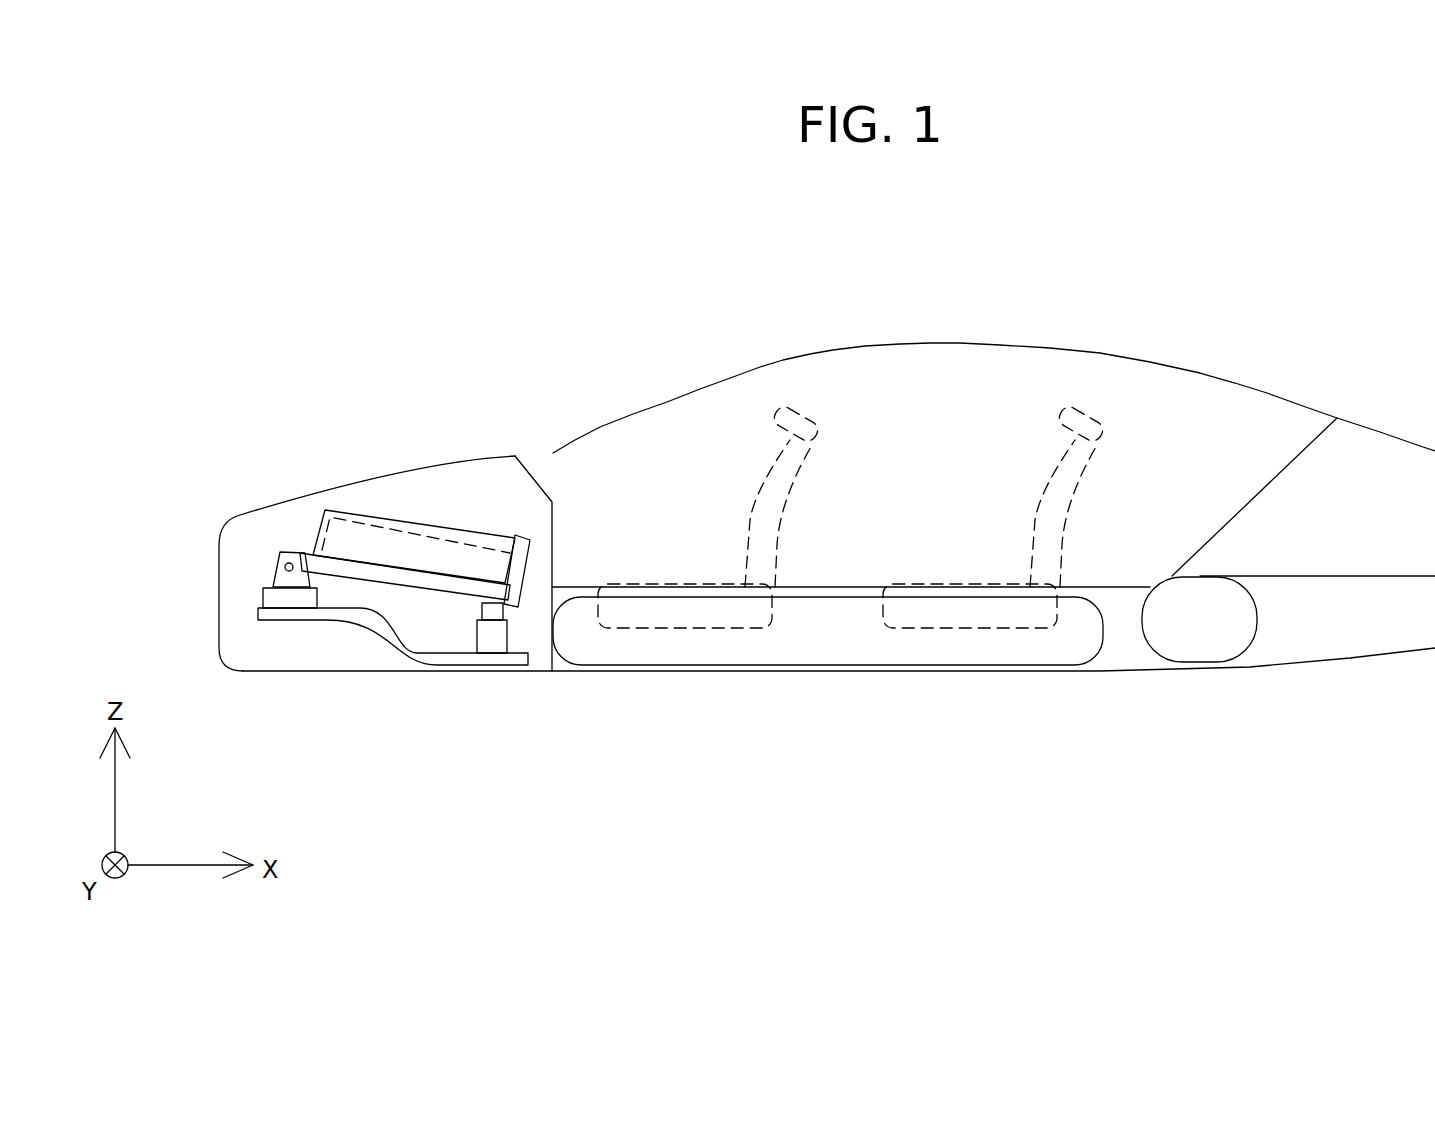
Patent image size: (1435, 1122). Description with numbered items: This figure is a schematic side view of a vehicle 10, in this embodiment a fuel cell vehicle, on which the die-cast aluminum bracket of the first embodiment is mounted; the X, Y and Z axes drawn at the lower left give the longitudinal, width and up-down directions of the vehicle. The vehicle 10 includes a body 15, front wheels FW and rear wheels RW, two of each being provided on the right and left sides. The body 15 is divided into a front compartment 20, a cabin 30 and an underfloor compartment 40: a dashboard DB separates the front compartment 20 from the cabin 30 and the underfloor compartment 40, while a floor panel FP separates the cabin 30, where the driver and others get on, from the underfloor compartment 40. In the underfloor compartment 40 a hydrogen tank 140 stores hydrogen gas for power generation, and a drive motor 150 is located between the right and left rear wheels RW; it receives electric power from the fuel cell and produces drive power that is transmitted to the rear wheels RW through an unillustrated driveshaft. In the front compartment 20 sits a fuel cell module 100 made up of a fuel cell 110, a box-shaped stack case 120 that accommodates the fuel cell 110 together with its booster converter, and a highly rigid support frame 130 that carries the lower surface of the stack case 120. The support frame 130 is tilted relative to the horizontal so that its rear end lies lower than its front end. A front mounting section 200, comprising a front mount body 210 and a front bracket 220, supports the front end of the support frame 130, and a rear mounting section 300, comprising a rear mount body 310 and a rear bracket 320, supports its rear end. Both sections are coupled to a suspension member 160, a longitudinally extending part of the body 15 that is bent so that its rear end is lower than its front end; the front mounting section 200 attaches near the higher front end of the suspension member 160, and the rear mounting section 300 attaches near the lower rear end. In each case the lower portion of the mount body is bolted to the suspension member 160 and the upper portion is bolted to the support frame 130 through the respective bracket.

The vehicle 10 is at (1283, 248).
The body 15 is at (1082, 347).
The front compartment 20 is at (450, 510).
The cabin 30 is at (957, 462).
The underfloor compartment 40 is at (1112, 652).
The fuel cell module 100 is at (411, 477).
The fuel cell 110 is at (513, 578).
The stack case 120 is at (377, 520).
The support frame 130 is at (307, 557).
The hydrogen tank 140 is at (853, 667).
The drive motor 150 is at (1257, 630).
The suspension member 160 is at (357, 623).
The front mounting section 200 is at (227, 497).
The front mount body 210 is at (270, 582).
The front bracket 220 is at (283, 552).
The rear mounting section 300 is at (593, 698).
The rear mount body 310 is at (512, 633).
The rear bracket 320 is at (510, 615).
The dashboard DB is at (577, 473).
The floor panel FP is at (863, 563).
The front wheels FW is at (414, 638).
The rear wheels RW is at (1229, 639).